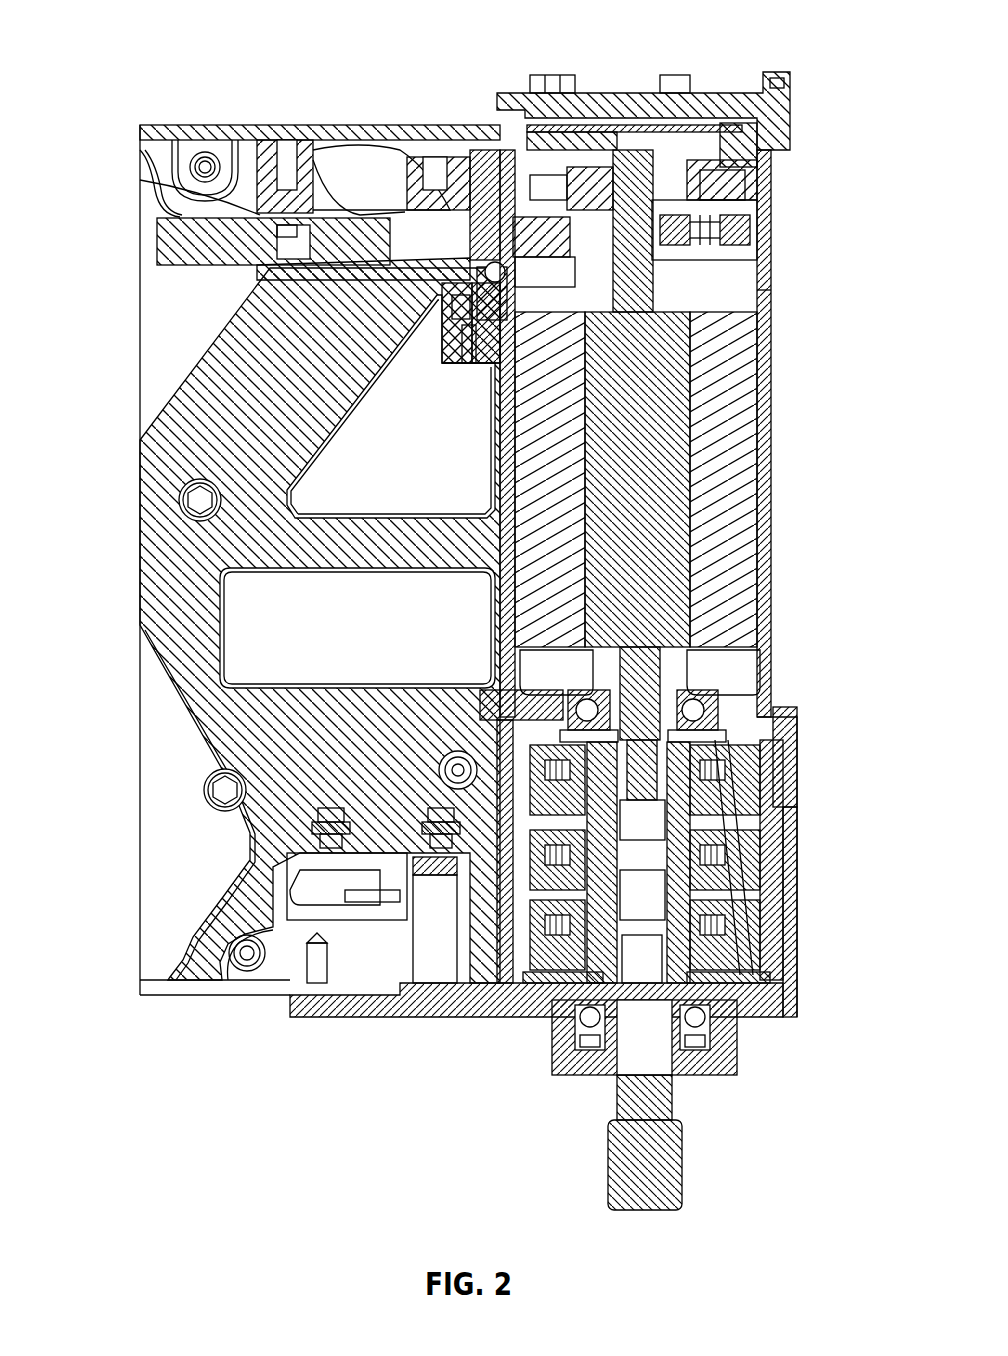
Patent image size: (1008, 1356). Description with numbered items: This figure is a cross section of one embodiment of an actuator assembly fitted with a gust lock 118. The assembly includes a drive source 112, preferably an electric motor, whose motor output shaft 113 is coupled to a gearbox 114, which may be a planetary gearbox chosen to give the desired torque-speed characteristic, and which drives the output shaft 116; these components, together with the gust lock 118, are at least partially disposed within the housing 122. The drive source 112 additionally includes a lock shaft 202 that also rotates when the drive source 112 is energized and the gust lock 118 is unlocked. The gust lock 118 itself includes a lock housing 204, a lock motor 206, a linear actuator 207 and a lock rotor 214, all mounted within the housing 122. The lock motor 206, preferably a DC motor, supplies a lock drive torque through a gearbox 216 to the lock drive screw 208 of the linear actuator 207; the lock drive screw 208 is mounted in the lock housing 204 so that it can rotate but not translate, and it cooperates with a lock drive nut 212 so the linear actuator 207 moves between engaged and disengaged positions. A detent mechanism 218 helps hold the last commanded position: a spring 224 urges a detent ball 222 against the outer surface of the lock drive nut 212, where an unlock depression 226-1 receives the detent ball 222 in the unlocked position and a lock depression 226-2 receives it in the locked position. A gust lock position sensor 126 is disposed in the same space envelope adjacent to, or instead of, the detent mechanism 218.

The drive source 112 is at (525, 634).
The motor output shaft 113 is at (665, 660).
The gearbox 114 is at (495, 945).
The output shaft 116 is at (672, 1098).
The gust lock 118 is at (413, 200).
The housing 122 is at (140, 593).
The gust lock position sensor 126 is at (458, 300).
The lock shaft 202 is at (640, 183).
The lock housing 204 is at (245, 270).
The lock motor 206 is at (170, 233).
The linear actuator 207 is at (395, 175).
The lock drive screw 208 is at (365, 222).
The lock drive nut 212 is at (612, 170).
The lock rotor 214 is at (700, 238).
The gearbox 216 is at (460, 290).
The detent mechanism 218 is at (460, 310).
The detent ball 222 is at (470, 292).
The spring 224 is at (452, 318).
The unlock depression 226-1 is at (493, 260).
The lock depression 226-2 is at (485, 265).